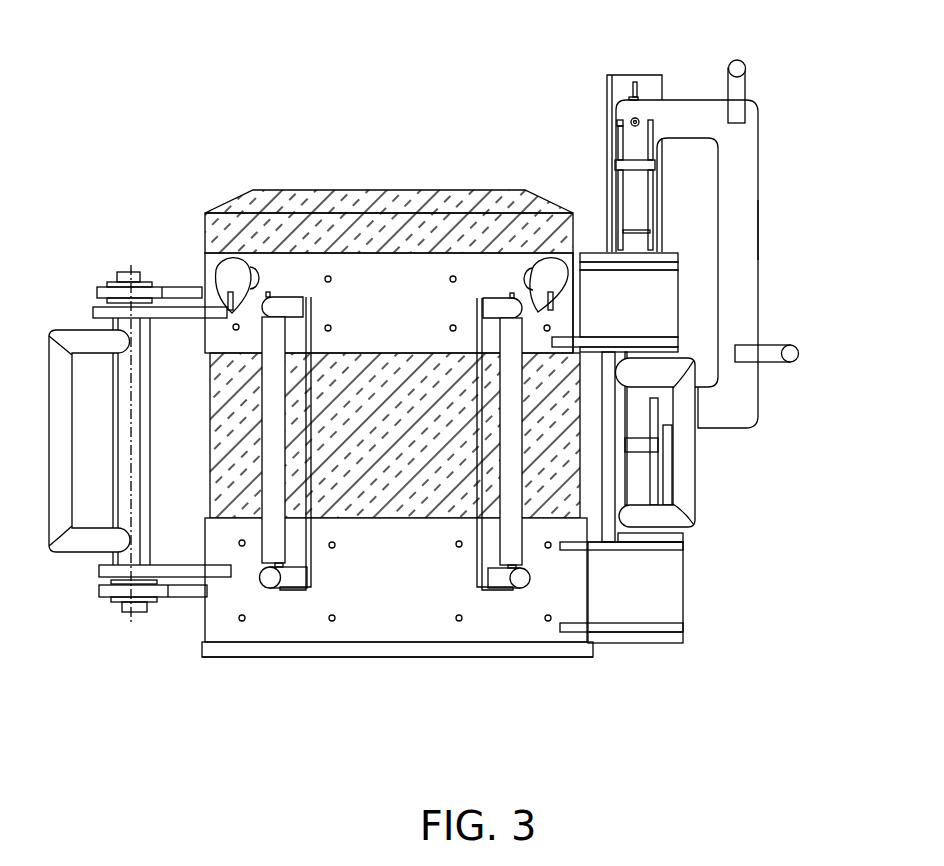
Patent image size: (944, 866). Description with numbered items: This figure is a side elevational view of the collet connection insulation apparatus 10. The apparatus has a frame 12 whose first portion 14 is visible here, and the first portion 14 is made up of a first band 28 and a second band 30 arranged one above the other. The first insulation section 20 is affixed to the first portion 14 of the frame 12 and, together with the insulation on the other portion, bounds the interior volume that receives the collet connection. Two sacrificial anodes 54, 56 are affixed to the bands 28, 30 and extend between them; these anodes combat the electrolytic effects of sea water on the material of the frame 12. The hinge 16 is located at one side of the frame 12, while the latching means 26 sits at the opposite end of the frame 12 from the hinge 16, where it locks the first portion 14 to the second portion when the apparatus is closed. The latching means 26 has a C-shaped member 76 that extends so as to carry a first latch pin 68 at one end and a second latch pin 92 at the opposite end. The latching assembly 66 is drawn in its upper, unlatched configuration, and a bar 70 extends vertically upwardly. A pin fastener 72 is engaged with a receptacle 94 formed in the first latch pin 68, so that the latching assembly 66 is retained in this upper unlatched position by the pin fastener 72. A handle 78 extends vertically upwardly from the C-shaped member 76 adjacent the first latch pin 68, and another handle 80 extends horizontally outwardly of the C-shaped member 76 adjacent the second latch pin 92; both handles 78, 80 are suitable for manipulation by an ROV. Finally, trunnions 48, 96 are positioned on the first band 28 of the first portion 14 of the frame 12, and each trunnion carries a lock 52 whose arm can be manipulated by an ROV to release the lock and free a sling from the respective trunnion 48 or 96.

The collet connection insulation apparatus 10 is at (752, 565).
The frame 12 is at (302, 632).
The first portion 14 is at (503, 627).
The hinge 16 is at (132, 607).
The first insulation section 20 is at (408, 225).
The latching means 26 is at (803, 258).
The first band 28 is at (367, 326).
The second band 30 is at (370, 604).
The trunnion 48 is at (233, 275).
The lock 52 is at (228, 305).
The sacrificial anode 54 is at (487, 550).
The sacrificial anode 56 is at (297, 552).
The latching assembly 66 is at (690, 107).
The first latch pin 68 is at (620, 215).
The bar 70 is at (607, 80).
The pin fastener 72 is at (617, 122).
The C-shaped member 76 is at (747, 218).
The handle 78 is at (742, 80).
The handle 80 is at (777, 348).
The second latch pin 92 is at (645, 488).
The receptacle 94 is at (631, 120).
The trunnion 96 is at (520, 272).